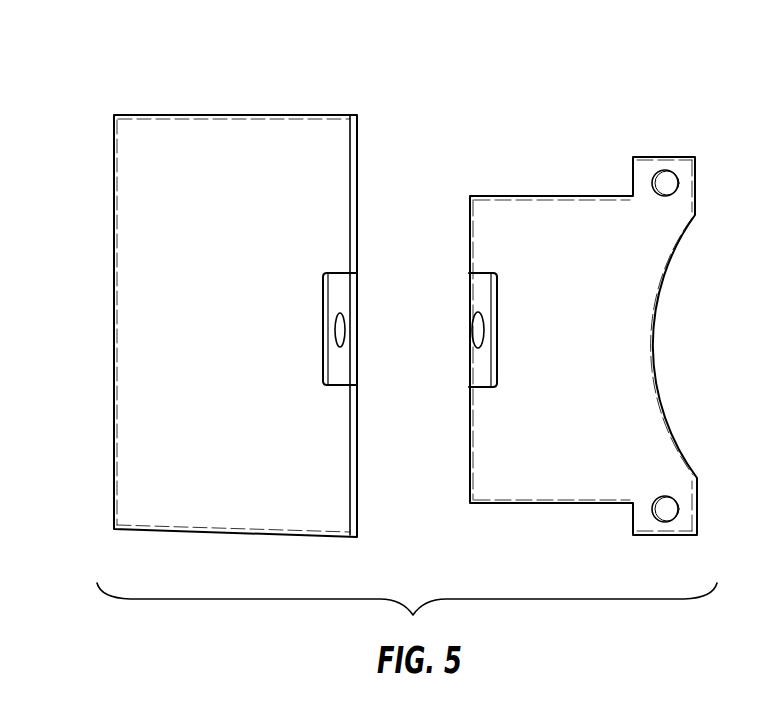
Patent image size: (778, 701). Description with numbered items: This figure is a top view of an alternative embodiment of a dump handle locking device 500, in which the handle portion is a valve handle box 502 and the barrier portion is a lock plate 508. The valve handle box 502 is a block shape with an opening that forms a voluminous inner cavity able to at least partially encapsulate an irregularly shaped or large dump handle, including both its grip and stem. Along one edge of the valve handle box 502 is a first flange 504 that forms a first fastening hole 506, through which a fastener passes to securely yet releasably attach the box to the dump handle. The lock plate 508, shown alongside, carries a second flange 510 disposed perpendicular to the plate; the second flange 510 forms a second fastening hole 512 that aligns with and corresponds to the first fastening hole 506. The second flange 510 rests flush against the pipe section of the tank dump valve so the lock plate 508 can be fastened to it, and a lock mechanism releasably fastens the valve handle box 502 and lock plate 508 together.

The locking device 500 is at (648, 82).
The valve handle box 502 is at (140, 235).
The first flange 504 is at (322, 378).
The first fastening hole 506 is at (343, 333).
The lock plate 508 is at (636, 351).
The second flange 510 is at (498, 293).
The second fastening hole 512 is at (478, 330).